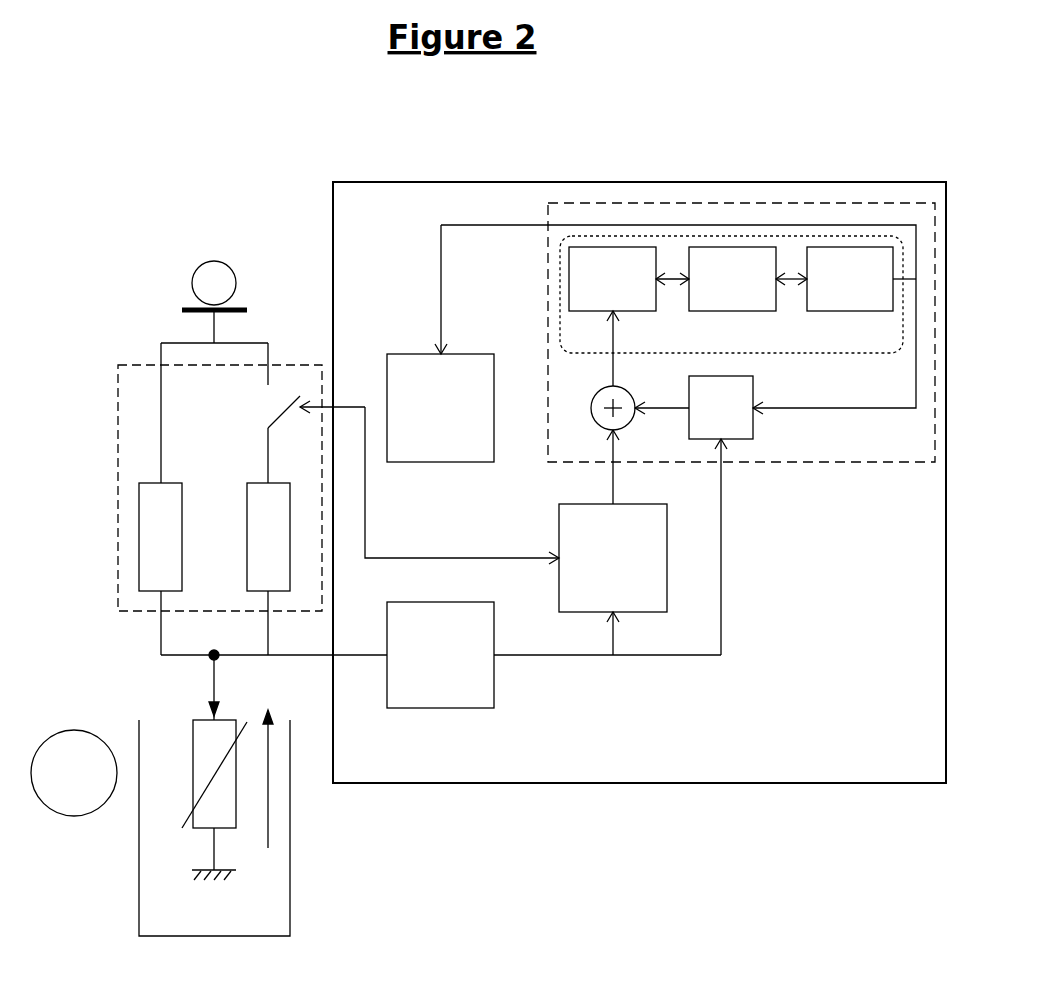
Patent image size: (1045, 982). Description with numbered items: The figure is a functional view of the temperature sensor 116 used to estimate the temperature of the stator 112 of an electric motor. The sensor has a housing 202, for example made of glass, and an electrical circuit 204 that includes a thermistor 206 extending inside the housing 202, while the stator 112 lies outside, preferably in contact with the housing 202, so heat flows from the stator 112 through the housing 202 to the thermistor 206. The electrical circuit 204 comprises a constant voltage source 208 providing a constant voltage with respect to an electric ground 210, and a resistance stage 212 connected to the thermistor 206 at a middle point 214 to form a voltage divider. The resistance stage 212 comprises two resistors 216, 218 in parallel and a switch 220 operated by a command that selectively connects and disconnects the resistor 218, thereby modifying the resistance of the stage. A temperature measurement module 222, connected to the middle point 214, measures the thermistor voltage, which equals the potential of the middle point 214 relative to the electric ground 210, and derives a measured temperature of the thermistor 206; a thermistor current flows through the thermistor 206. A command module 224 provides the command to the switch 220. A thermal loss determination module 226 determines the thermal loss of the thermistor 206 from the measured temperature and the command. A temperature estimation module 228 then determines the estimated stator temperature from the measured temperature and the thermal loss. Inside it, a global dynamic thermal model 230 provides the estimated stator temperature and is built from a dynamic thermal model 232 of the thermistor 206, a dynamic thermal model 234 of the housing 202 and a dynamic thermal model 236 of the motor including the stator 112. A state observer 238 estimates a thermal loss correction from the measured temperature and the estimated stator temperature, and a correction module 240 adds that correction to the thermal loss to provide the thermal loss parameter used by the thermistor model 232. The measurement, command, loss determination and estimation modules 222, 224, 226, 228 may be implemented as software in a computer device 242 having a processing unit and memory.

The stator 112 is at (78, 731).
The temperature sensor 116 is at (157, 172).
The housing 202 is at (290, 852).
The electrical circuit 204 is at (118, 348).
The thermistor 206 is at (193, 768).
The constant voltage source 208 is at (225, 265).
The electric ground 210 is at (197, 880).
The resistance stage 212 is at (118, 543).
The middle point 214 is at (214, 650).
The resistor 216 is at (182, 493).
The resistor 218 is at (247, 550).
The switch 220 is at (280, 419).
The temperature measurement module 222 is at (440, 655).
The command module 224 is at (440, 408).
The thermal loss determination module 226 is at (613, 558).
The temperature estimation module 228 is at (548, 322).
The global dynamic thermal model 230 is at (853, 353).
The dynamic thermal model of the thermistor 232 is at (612, 279).
The dynamic thermal model of the housing 234 is at (732, 279).
The dynamic thermal model of the motor 236 is at (850, 279).
The state observer 238 is at (721, 407).
The correction module 240 is at (594, 408).
The computer device 242 is at (405, 182).